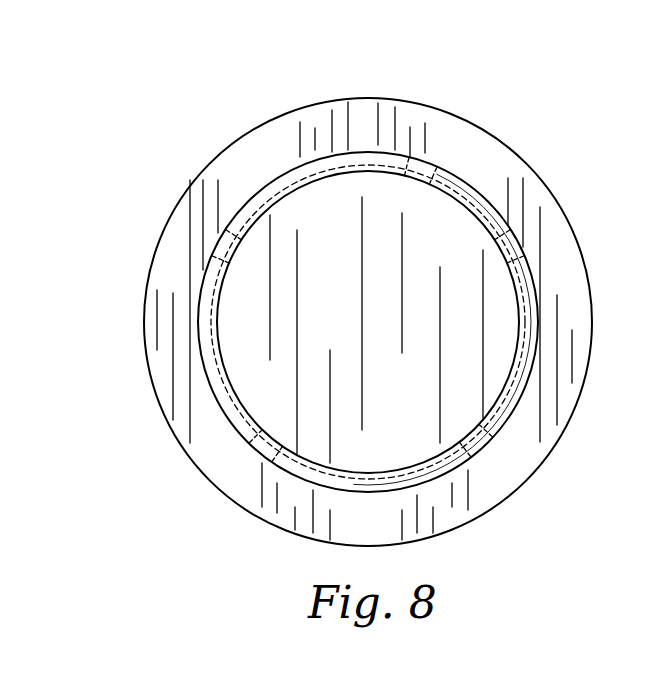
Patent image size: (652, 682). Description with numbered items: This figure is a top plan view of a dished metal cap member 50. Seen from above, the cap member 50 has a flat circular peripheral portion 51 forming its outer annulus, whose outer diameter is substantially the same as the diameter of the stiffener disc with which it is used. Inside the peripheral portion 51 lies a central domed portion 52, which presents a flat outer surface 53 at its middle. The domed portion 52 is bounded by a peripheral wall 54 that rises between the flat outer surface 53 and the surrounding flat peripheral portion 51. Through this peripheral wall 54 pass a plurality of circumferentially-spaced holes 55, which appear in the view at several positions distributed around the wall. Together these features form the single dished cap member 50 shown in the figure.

The cap member 50 is at (556, 168).
The flat circular peripheral portion 51 is at (508, 462).
The central domed portion 52 is at (241, 431).
The flat outer surface 53 is at (337, 247).
The peripheral wall 54 is at (520, 404).
The holes 55 is at (431, 163).